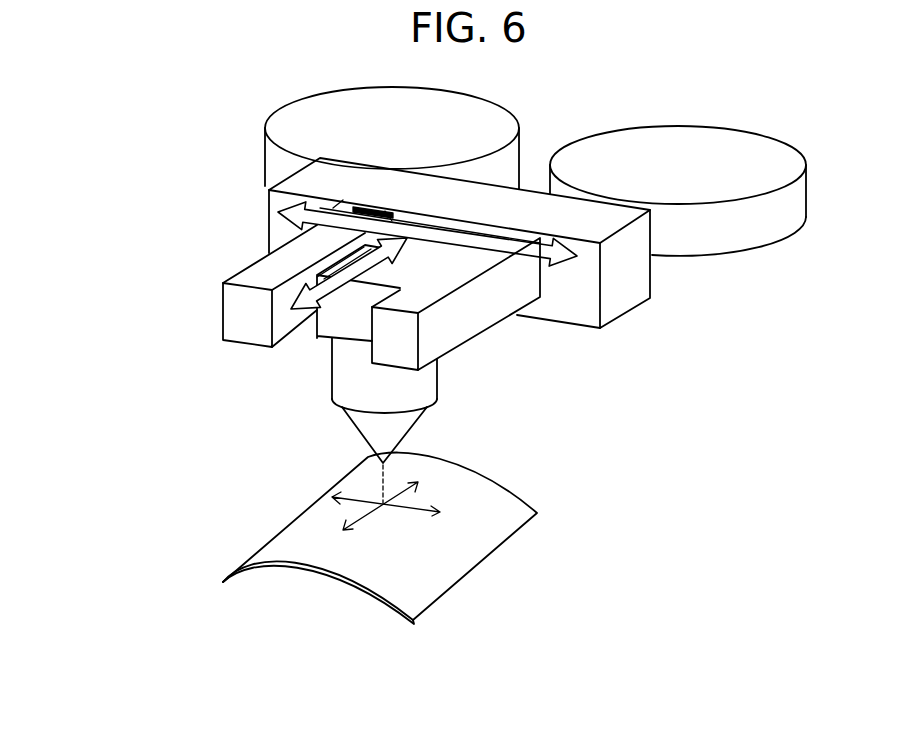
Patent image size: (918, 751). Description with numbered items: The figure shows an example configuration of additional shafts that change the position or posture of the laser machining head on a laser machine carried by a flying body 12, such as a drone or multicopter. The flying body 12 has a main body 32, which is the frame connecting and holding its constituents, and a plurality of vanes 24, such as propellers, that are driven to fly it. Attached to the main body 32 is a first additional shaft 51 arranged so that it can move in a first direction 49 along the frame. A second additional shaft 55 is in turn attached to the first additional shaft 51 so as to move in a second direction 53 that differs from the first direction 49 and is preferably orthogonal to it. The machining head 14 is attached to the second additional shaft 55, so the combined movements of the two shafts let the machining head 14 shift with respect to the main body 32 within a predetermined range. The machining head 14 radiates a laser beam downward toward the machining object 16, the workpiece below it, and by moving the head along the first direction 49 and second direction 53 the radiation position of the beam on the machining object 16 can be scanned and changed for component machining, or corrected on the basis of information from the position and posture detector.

The flying body 12 is at (210, 128).
The machining head 14 is at (440, 390).
The machining object 16 is at (450, 620).
The vanes 24 is at (760, 223).
The main body 32 is at (632, 310).
The first direction 49 is at (497, 208).
The first additional shaft 51 is at (243, 333).
The second direction 53 is at (355, 268).
The second additional shaft 55 is at (323, 327).